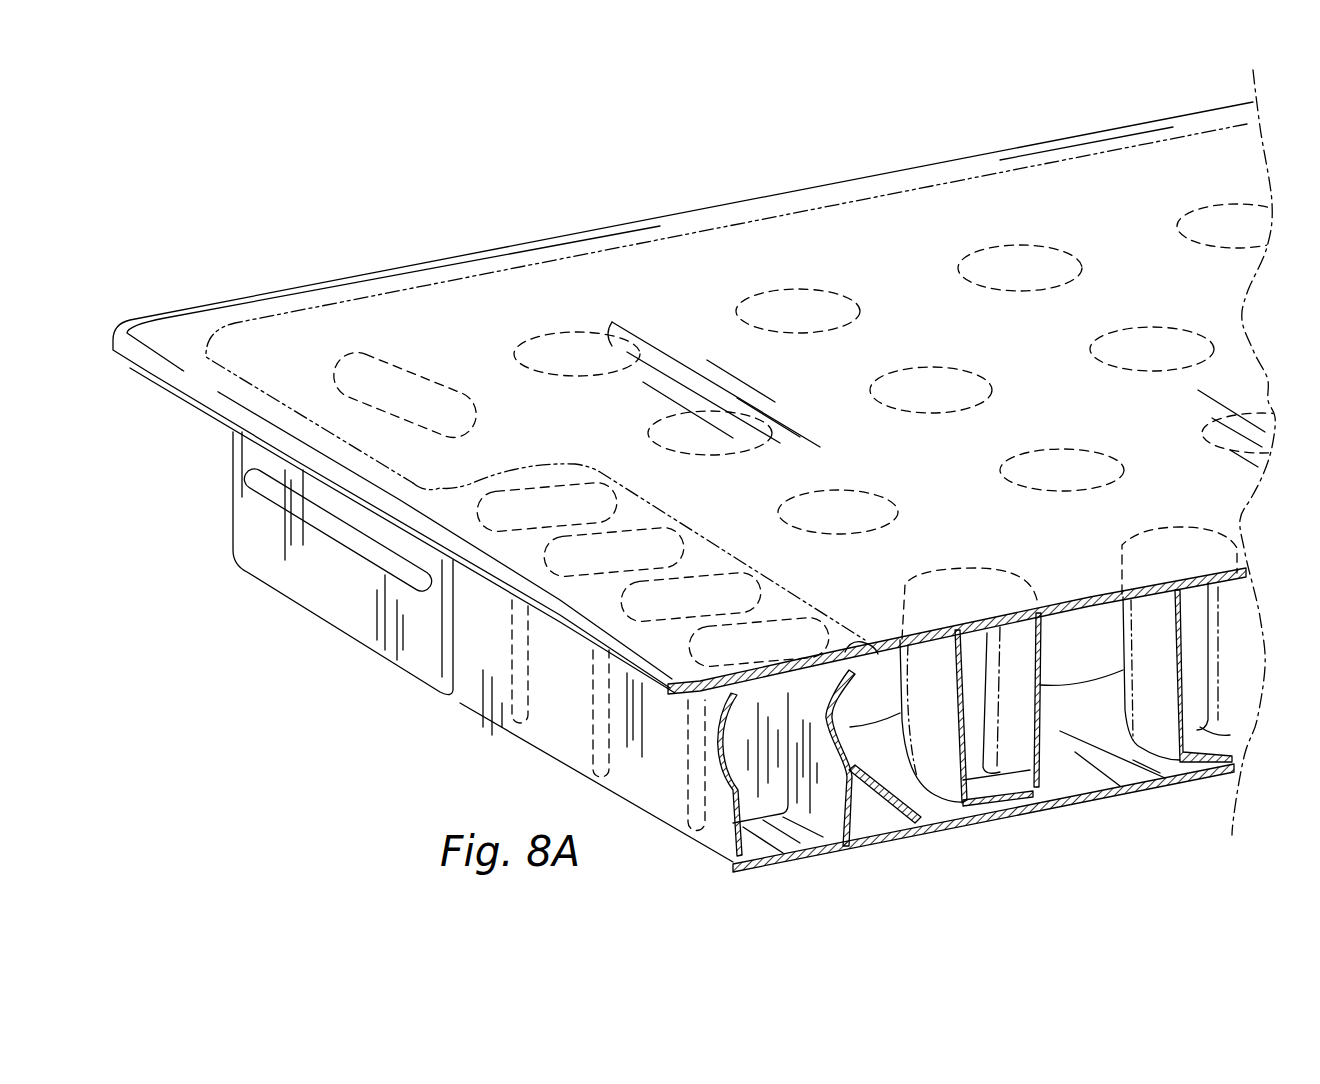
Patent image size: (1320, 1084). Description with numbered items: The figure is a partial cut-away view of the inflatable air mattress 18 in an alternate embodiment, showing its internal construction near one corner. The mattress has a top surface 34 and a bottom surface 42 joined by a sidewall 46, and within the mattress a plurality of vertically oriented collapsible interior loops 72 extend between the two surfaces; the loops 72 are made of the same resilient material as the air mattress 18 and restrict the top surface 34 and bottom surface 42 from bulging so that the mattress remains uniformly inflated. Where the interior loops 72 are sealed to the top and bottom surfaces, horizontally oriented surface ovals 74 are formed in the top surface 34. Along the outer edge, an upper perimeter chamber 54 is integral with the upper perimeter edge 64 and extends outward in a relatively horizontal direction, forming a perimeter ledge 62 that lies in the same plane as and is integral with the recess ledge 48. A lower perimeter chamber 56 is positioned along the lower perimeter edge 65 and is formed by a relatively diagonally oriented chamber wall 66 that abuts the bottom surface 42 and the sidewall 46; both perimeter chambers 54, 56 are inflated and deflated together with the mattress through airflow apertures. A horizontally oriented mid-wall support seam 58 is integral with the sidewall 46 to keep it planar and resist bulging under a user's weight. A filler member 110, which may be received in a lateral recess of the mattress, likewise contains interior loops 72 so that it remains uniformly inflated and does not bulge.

The air mattress 18 is at (238, 495).
The top surface 34 is at (982, 504).
The bottom surface 42 is at (1067, 780).
The sidewall 46 is at (353, 605).
The recess ledge 48 is at (703, 558).
The upper perimeter chamber 54 is at (877, 655).
The lower perimeter chamber 56 is at (882, 820).
The mid-wall support seam 58 is at (242, 473).
The perimeter ledge 62 is at (333, 456).
The upper perimeter edge 64 is at (288, 312).
The lower perimeter edge 65 is at (857, 845).
The chamber wall 66 is at (913, 815).
The collapsible interior loops 72 is at (1037, 780).
The surface ovals 74 is at (430, 384).
The filler member 110 is at (563, 723).